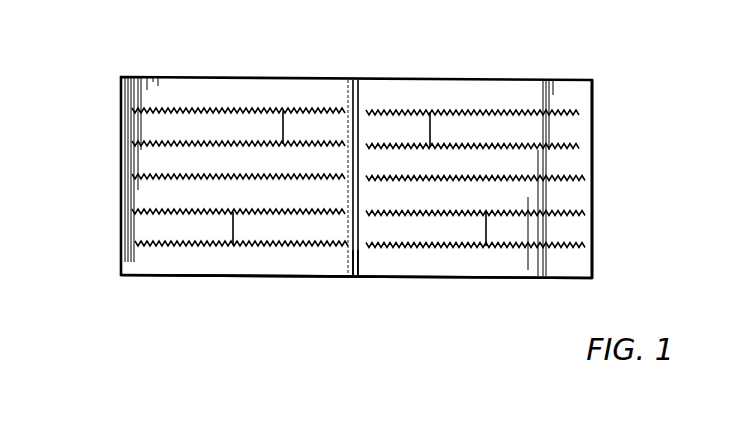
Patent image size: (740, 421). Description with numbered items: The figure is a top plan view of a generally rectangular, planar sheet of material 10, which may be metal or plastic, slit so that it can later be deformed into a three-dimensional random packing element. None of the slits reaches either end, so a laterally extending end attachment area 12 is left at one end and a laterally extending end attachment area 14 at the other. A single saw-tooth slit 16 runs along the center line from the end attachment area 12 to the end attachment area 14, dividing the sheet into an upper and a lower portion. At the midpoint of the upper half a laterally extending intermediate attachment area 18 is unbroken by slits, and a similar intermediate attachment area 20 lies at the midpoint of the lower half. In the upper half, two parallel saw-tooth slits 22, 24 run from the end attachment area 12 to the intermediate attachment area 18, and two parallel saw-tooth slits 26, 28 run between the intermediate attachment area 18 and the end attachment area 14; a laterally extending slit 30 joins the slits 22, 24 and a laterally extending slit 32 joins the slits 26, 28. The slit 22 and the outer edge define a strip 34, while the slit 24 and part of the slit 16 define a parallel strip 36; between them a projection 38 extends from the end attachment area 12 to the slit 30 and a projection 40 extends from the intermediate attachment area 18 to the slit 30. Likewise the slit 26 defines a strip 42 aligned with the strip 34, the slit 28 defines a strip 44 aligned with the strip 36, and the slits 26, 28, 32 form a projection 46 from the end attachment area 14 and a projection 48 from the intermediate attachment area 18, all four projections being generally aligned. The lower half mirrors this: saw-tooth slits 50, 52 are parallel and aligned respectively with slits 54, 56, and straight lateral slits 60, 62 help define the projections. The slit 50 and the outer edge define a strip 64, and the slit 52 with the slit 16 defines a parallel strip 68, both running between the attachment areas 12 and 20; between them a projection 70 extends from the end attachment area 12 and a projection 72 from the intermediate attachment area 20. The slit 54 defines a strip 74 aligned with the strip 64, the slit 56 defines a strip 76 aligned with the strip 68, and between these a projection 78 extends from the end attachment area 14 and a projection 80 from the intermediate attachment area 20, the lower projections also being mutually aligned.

The sheet of material 10 is at (172, 303).
The end attachment area 12 is at (118, 262).
The end attachment area 14 is at (593, 228).
The saw-tooth slit 16 is at (160, 176).
The intermediate attachment area 18 is at (357, 61).
The intermediate attachment area 20 is at (343, 284).
The saw-tooth slit 22 is at (148, 108).
The saw-tooth slit 24 is at (163, 142).
The saw-tooth slit 26 is at (555, 112).
The saw-tooth slit 28 is at (557, 146).
The laterally-extending slit 30 is at (283, 118).
The laterally-extending slit 32 is at (431, 113).
The strip 34 is at (229, 93).
The strip 36 is at (187, 127).
The projection 38 is at (210, 127).
The projection 40 is at (318, 130).
The strip 42 is at (480, 95).
The strip 44 is at (522, 165).
The projection 46 is at (498, 130).
The projection 48 is at (400, 127).
The slit 50 is at (160, 243).
The slit 52 is at (158, 212).
The slit 54 is at (557, 247).
The slit 56 is at (557, 213).
The laterally-extending straight slit 60 is at (238, 230).
The laterally-extending straight slit 62 is at (484, 244).
The strip 64 is at (168, 263).
The strip 68 is at (264, 195).
The projection 70 is at (207, 229).
The projection 72 is at (303, 230).
The strip 74 is at (385, 262).
The strip 76 is at (430, 197).
The projection 78 is at (515, 230).
The projection 80 is at (457, 230).